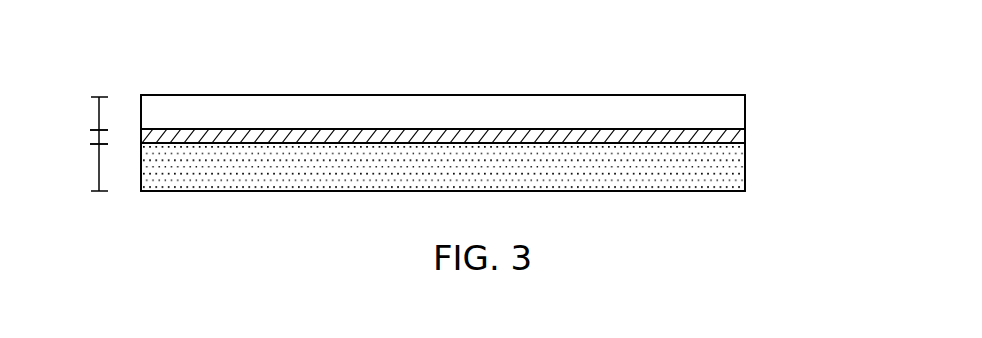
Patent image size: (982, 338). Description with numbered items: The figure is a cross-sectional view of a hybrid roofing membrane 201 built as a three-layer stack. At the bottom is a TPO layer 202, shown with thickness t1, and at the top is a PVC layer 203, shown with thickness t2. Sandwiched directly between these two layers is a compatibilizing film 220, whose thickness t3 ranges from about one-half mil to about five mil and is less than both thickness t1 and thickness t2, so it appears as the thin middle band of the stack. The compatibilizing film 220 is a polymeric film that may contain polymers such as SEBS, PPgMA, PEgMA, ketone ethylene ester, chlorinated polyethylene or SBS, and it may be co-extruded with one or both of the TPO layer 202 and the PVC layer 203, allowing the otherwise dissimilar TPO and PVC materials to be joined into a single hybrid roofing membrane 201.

The hybrid roofing membrane 201 is at (173, 65).
The PVC layer 203 is at (735, 113).
The compatibilizing film 220 is at (735, 138).
The TPO layer 202 is at (735, 171).
The thickness of TPO layer t1 is at (99, 177).
The thickness of PVC layer t2 is at (99, 113).
The thickness of compatibilizing film t3 is at (99, 137).